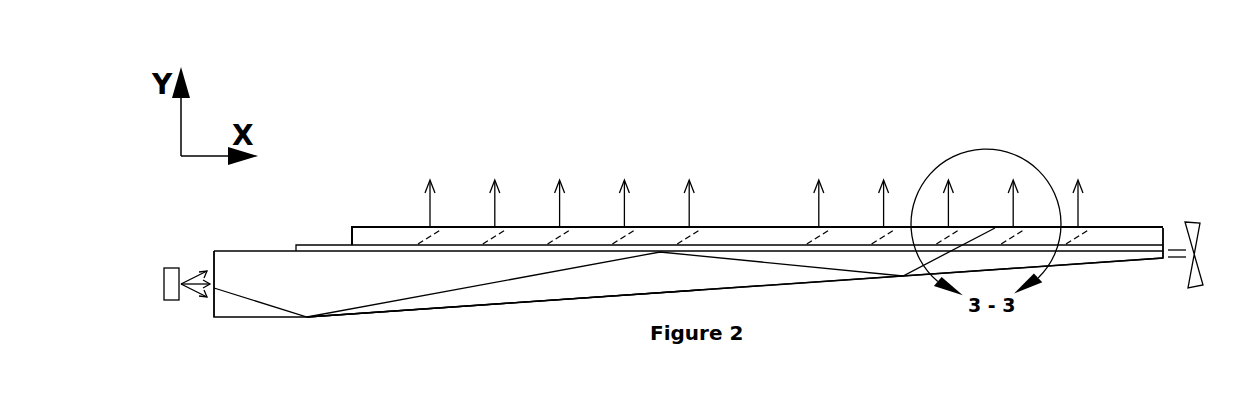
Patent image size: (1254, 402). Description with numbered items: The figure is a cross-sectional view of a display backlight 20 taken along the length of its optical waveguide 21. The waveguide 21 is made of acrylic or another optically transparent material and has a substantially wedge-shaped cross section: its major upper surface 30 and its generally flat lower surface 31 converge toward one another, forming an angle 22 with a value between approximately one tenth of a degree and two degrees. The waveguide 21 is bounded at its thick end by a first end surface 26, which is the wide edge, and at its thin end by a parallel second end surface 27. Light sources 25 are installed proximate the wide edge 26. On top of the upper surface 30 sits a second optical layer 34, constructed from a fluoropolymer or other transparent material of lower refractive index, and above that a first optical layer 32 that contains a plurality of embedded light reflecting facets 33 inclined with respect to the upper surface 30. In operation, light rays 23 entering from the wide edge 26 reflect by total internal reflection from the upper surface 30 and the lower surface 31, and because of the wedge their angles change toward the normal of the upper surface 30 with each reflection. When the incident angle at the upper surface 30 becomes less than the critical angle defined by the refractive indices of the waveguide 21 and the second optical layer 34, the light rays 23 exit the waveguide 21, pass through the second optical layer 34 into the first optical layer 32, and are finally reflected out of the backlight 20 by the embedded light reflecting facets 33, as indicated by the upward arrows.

The display backlight 20 is at (294, 97).
The optical waveguide 21 is at (542, 291).
The angle 22 is at (1213, 190).
The light rays 23 is at (192, 298).
The light sources 25 is at (172, 268).
The first end surface 26 is at (205, 318).
The second end surface 27 is at (1164, 260).
The upper surface 30 is at (245, 251).
The lower surface 31 is at (450, 308).
The first optical layer 32 is at (383, 233).
The embedded light reflecting facets 33 is at (553, 237).
The second optical layer 34 is at (307, 245).